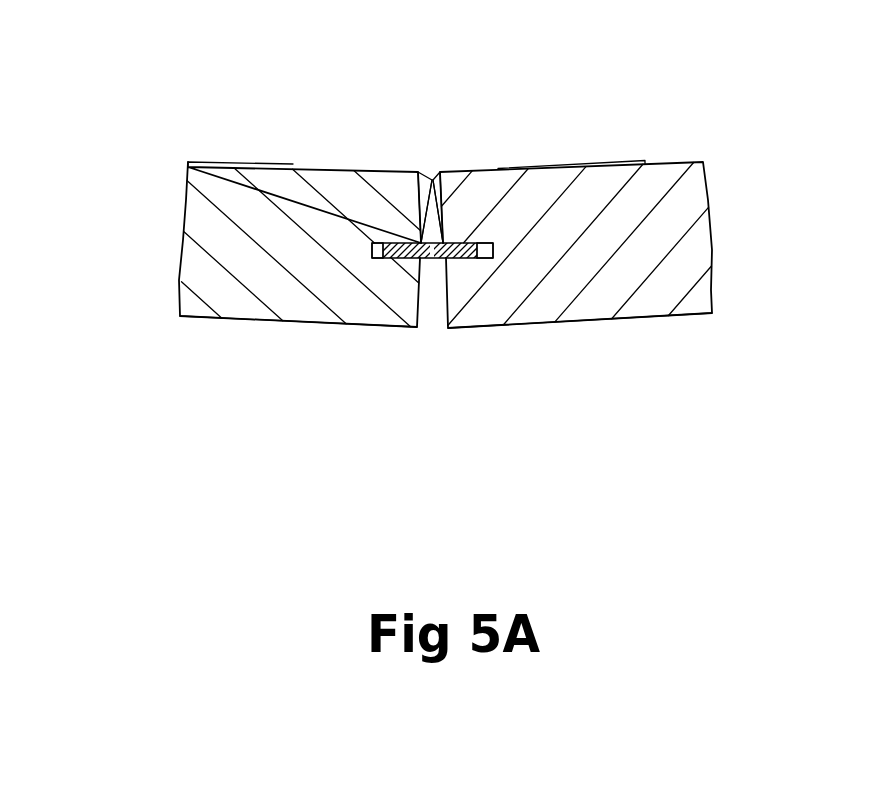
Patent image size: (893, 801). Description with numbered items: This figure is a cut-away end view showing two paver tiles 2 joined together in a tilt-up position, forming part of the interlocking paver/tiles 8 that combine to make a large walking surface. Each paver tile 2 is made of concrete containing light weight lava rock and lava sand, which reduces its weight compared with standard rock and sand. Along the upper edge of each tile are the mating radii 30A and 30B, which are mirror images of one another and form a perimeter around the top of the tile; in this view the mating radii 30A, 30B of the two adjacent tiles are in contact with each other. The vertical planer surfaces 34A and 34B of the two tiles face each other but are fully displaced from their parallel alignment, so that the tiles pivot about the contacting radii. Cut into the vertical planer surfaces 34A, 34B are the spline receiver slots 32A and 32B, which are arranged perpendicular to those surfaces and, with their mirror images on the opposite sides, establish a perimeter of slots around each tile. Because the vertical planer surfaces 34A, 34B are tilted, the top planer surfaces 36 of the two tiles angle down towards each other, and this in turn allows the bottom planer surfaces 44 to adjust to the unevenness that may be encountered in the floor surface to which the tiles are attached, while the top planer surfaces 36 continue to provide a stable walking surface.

The paver tile 2 is at (74, 391).
The interlocking paver/tiles 8 is at (509, 458).
The mating radius 30A is at (360, 143).
The mating radius 30B is at (497, 145).
The spline receiver slot 32A is at (269, 333).
The spline receiver slot 32B is at (563, 349).
The vertical planer surface 34A is at (279, 136).
The vertical planer surface 34B is at (551, 151).
The top planer surface 36 is at (447, 128).
The bottom planer surface 44 is at (484, 412).